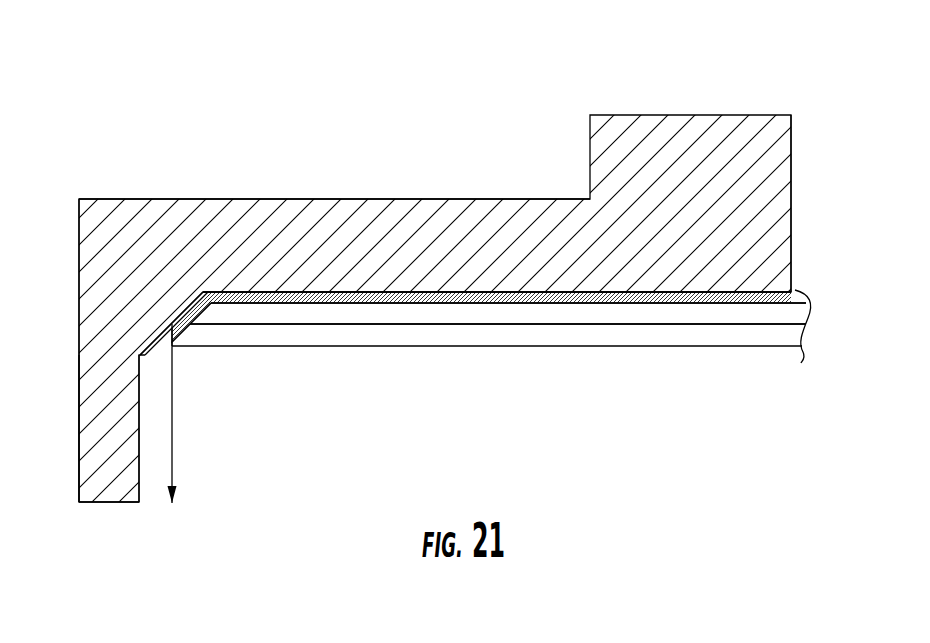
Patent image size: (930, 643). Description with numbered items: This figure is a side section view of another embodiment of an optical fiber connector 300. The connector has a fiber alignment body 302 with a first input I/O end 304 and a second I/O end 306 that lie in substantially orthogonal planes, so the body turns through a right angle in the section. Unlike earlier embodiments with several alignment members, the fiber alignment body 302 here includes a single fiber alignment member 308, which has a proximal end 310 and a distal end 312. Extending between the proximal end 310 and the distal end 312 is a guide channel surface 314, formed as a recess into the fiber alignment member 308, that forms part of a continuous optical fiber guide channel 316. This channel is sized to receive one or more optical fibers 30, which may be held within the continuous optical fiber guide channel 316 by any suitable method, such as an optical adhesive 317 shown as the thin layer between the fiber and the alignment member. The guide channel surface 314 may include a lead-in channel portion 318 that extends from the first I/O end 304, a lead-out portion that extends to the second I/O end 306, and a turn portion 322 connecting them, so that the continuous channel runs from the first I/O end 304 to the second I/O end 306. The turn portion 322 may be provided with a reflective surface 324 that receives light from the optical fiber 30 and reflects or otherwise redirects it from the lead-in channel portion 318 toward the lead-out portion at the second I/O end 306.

The optical fiber connector 300 is at (410, 153).
The fiber alignment body 302 is at (170, 165).
The first input I/O end 304 is at (808, 286).
The second I/O end 306 is at (126, 527).
The fiber alignment member 308 is at (353, 207).
The proximal end 310 is at (791, 186).
The distal end 312 is at (79, 397).
The guide channel surface 314 is at (461, 292).
The continuous optical fiber guide channel 316 is at (460, 306).
The optical adhesive 317 is at (665, 303).
The lead-in channel portion 318 is at (625, 292).
The turn portion 322 is at (128, 245).
The reflective surface 324 is at (174, 323).
The optical fiber 30 is at (292, 335).